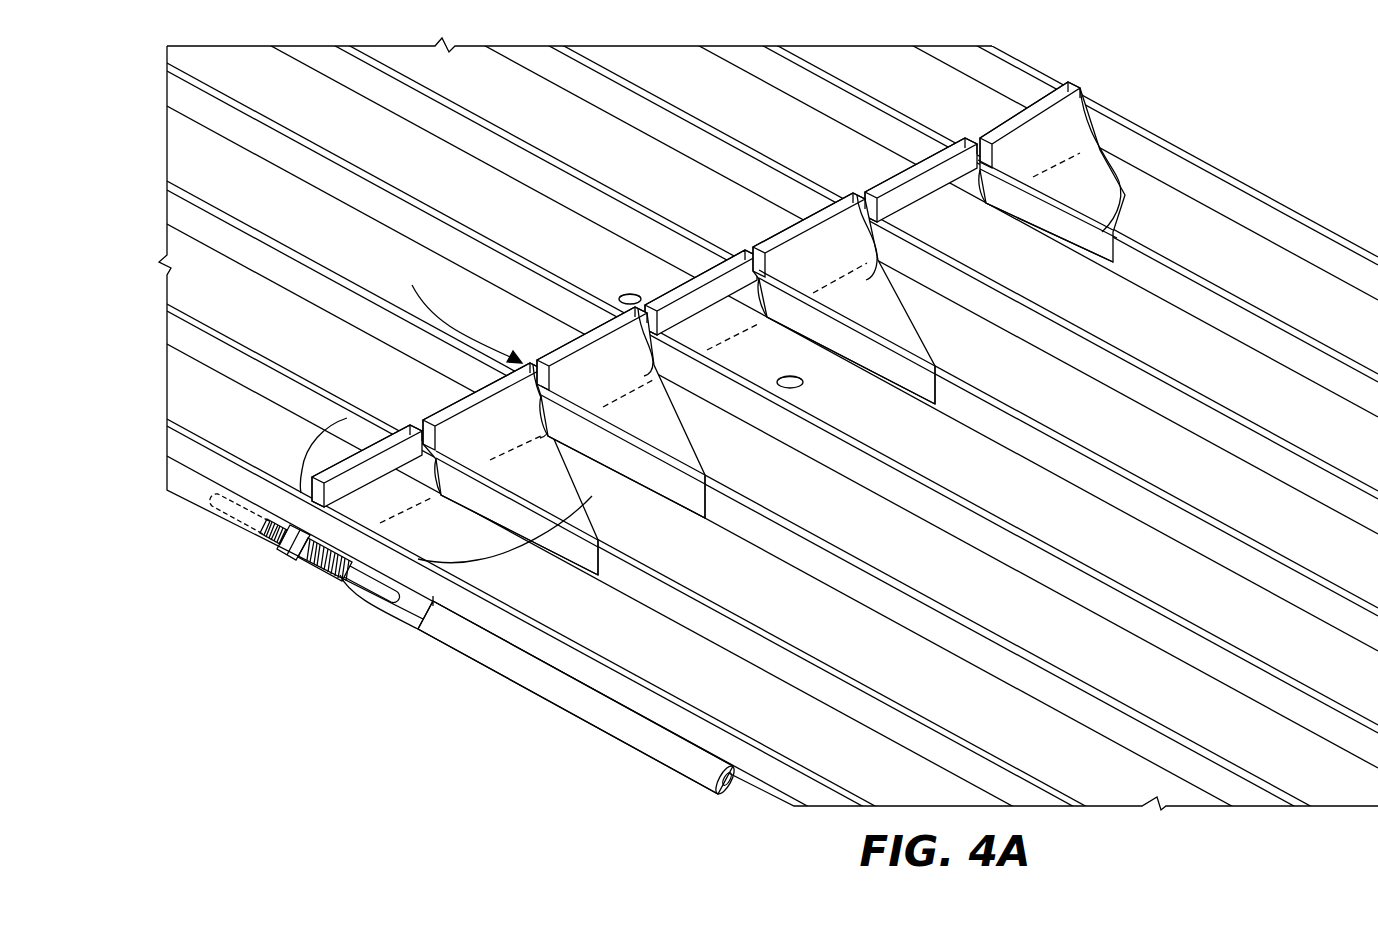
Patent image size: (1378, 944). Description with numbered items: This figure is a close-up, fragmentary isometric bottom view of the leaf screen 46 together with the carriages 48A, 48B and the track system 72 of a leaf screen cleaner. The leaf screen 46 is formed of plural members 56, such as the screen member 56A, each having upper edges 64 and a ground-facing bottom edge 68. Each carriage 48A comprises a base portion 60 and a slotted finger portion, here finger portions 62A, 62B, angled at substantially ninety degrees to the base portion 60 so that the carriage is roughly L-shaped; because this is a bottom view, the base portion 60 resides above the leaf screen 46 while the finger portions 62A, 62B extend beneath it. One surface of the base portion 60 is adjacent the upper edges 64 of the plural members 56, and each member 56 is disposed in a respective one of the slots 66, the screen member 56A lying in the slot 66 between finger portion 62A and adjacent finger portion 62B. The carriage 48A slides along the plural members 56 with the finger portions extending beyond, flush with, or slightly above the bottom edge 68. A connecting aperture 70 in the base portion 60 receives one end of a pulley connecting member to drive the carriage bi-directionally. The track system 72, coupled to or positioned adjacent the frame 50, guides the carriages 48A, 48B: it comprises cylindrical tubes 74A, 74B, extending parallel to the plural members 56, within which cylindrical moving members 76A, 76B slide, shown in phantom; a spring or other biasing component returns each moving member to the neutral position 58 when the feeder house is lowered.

The leaf screen 46 is at (1208, 187).
The carriage 48A is at (1097, 183).
The carriage 48B is at (870, 190).
The frame 50 is at (1295, 210).
The plural members 56 is at (1193, 293).
The screen member 56A is at (869, 585).
The neutral position 58 is at (1112, 92).
The base portion 60 is at (810, 365).
The finger portion 62A is at (500, 428).
The finger portion 62B is at (613, 367).
The upper edges 64 is at (647, 130).
The slots 66 is at (457, 311).
The bottom edge 68 is at (748, 128).
The connecting aperture 70 is at (771, 373).
The track system 72 is at (450, 645).
The cylindrical tube 74A is at (453, 648).
The cylindrical tube 74B is at (268, 555).
The cylindrical moving member 76A is at (355, 590).
The cylindrical moving member 76B is at (247, 520).